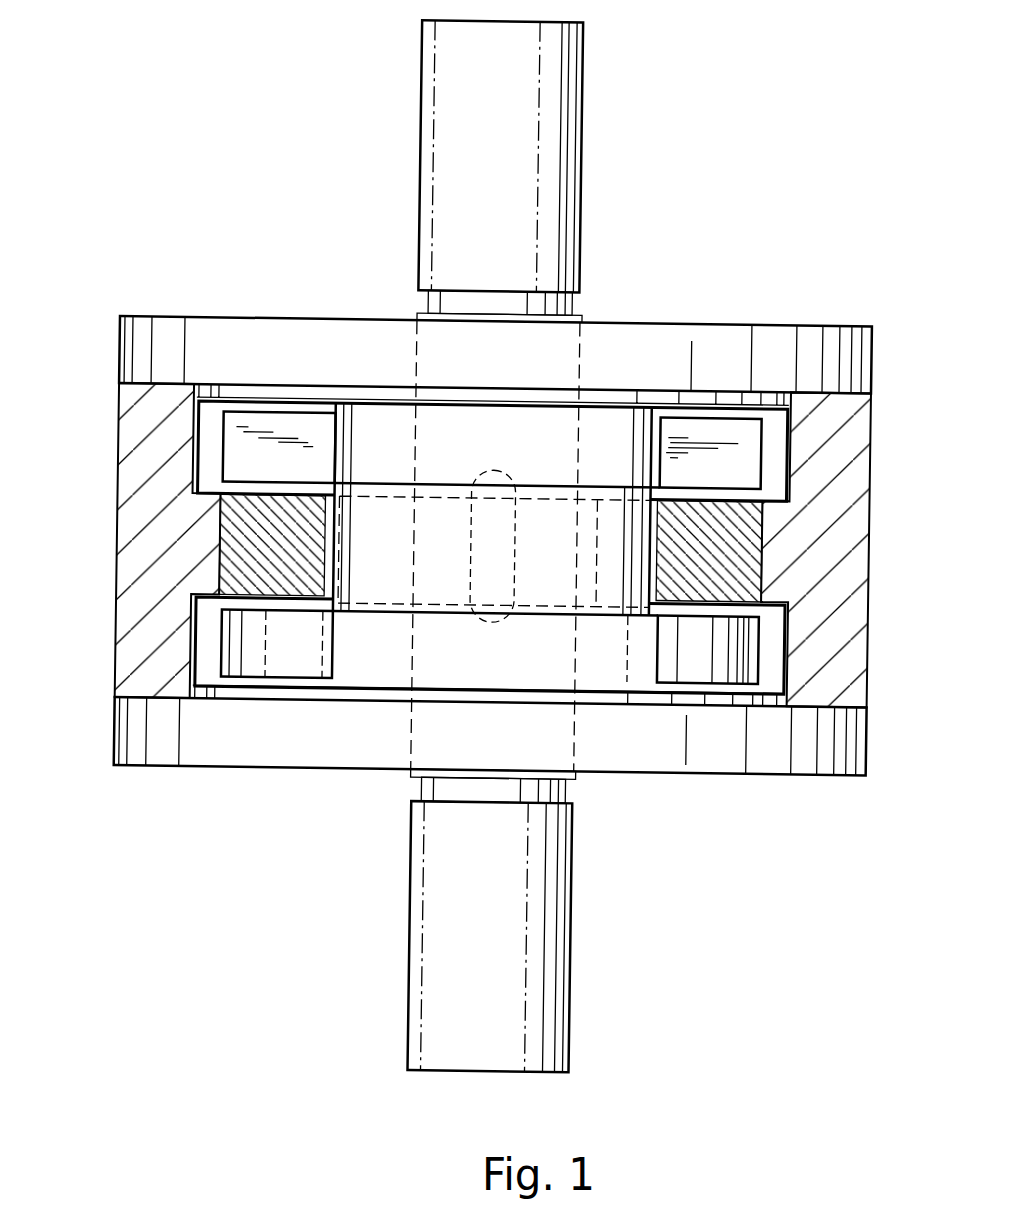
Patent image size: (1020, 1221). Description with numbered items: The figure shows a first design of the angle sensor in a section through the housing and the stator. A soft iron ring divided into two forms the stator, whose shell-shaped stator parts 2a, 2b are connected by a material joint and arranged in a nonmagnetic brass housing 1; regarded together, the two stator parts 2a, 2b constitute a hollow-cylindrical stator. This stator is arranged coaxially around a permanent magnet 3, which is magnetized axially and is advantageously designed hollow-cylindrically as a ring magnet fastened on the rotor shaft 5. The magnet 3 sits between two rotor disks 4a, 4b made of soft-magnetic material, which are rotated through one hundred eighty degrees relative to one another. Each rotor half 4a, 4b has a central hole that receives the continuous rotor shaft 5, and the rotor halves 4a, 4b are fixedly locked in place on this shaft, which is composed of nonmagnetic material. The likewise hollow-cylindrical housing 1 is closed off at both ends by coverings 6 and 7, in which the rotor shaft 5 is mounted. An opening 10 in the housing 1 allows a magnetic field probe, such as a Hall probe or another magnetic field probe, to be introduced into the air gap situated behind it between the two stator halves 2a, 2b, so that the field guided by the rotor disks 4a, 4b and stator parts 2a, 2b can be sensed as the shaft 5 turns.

The housing 1 is at (837, 445).
The stator part 2a is at (735, 558).
The stator part 2b is at (270, 550).
The permanent magnet 3 is at (392, 556).
The rotor disk 4a is at (378, 433).
The rotor disk 4b is at (372, 648).
The rotor shaft 5 is at (563, 97).
The covering 6 is at (718, 350).
The covering 7 is at (700, 747).
The opening 10 is at (498, 567).